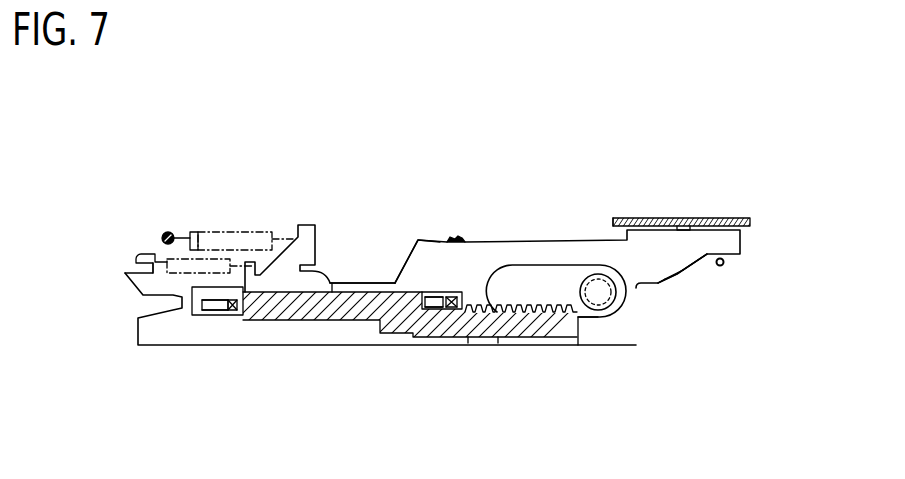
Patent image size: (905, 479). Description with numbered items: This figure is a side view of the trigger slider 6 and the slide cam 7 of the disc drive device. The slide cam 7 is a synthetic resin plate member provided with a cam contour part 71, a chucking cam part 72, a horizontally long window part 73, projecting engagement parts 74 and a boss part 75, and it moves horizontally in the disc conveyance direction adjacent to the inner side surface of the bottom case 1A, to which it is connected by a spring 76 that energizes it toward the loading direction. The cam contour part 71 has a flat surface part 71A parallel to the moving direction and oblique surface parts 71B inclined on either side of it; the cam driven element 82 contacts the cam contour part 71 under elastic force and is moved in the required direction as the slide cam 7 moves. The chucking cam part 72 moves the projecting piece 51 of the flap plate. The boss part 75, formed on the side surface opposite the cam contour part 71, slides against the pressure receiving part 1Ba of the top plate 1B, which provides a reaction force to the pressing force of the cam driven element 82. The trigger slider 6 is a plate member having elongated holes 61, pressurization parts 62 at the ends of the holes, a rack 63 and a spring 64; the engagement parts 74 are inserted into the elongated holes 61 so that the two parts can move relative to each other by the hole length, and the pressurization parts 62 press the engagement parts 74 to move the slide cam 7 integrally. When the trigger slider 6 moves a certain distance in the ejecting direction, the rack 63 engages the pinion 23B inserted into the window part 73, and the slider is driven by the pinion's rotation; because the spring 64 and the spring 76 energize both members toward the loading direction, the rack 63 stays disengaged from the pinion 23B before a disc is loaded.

The bottom case 1A is at (163, 236).
The top plate 1B is at (726, 217).
The pressure receiving part 1Ba is at (633, 217).
The trigger slider 6 is at (336, 313).
The slide cam 7 is at (572, 240).
The pinion 23B is at (600, 316).
The projecting piece 51 is at (450, 236).
The elongated hole 61 is at (222, 300).
The pressurization part 62 is at (186, 313).
The rack 63 is at (533, 277).
The spring 64 is at (223, 251).
The cam contour part 71 is at (743, 413).
The flat surface part 71A is at (674, 274).
The oblique surface part 71B is at (660, 283).
The chucking cam part 72 is at (418, 239).
The window part 73 is at (537, 273).
The engagement part 74 is at (230, 308).
The boss part 75 is at (684, 225).
The spring 76 is at (235, 232).
The cam driven element 82 is at (723, 264).